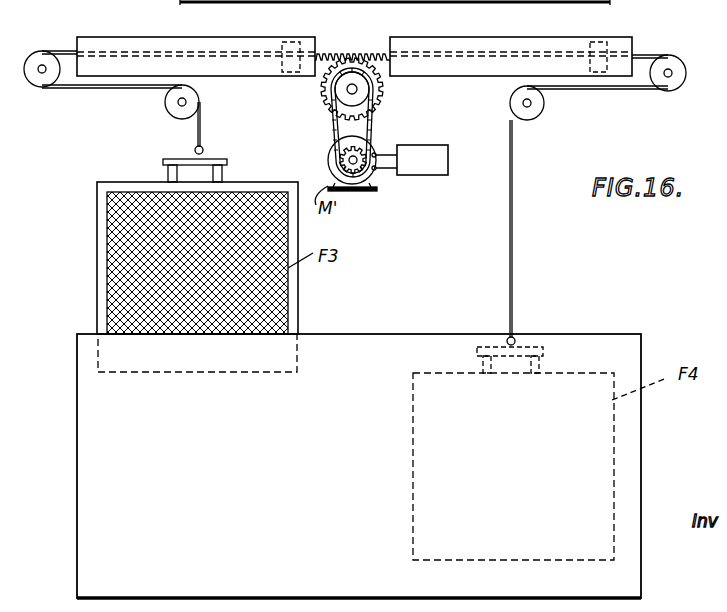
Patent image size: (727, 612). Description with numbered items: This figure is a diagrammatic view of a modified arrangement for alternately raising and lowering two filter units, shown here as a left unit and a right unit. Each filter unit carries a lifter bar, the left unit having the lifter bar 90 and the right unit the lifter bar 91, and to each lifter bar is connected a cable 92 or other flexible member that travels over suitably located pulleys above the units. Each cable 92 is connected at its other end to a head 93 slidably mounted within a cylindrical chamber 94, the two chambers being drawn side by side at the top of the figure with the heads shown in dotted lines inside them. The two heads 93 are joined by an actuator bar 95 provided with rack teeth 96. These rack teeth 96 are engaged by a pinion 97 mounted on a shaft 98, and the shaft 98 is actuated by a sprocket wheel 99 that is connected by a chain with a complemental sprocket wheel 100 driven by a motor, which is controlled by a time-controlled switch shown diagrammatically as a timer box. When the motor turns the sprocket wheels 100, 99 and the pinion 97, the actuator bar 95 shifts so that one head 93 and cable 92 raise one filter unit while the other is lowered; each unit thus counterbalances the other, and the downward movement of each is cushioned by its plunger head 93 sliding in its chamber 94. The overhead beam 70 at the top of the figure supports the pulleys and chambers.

The overhead frame beam 70 is at (364, 1).
The lifter bar 90 is at (170, 158).
The lifter bar 91 is at (532, 337).
The cable 92 is at (97, 88).
The head 93 is at (285, 72).
The cylindrical chamber 94 is at (138, 40).
The actuator bar 95 is at (325, 53).
The rack teeth 96 is at (388, 64).
The pinion 97 is at (322, 96).
The shaft 98 is at (358, 93).
The sprocket wheel 99 is at (347, 99).
The complemental sprocket wheel 100 is at (367, 177).